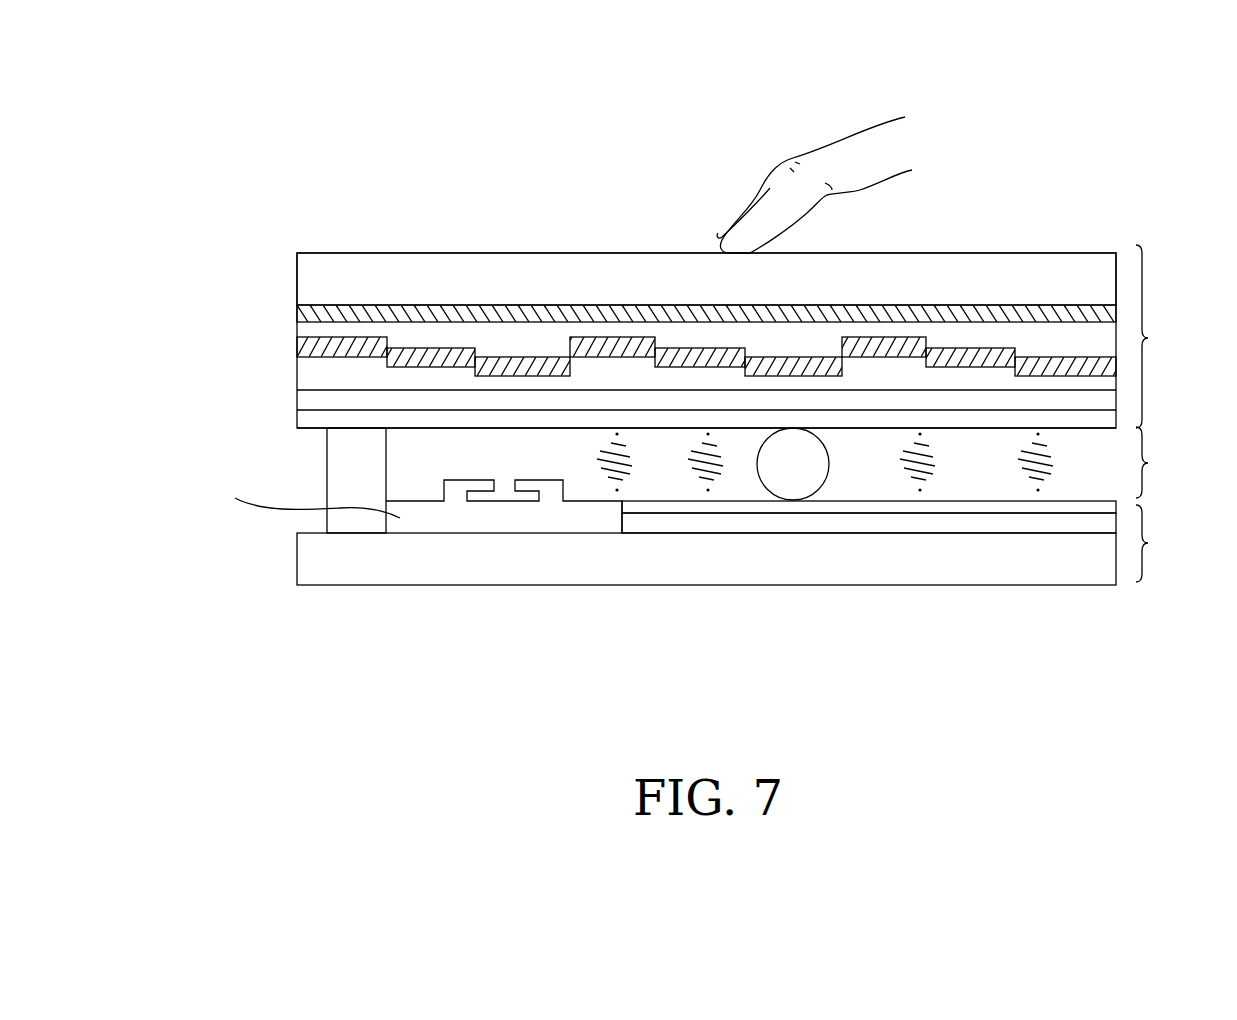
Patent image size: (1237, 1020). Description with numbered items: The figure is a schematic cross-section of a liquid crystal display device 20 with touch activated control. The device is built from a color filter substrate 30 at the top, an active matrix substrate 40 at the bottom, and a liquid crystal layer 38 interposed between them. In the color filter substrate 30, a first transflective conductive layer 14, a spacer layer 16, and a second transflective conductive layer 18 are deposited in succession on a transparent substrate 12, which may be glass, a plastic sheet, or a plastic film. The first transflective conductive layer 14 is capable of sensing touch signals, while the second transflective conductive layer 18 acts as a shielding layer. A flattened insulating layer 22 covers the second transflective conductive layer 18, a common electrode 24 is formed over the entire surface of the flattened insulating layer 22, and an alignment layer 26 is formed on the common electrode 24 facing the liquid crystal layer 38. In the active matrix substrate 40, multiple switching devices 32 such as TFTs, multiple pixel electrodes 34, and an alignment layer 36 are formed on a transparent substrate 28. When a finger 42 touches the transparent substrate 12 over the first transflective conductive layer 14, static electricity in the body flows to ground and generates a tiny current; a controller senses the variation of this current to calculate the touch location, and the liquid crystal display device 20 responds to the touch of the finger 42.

The liquid crystal display device 20 is at (1231, 90).
The transparent substrate 12 is at (307, 280).
The first transflective conductive layer 14 is at (305, 317).
The spacer layer 16 is at (307, 329).
The second transflective conductive layer 18 is at (307, 348).
The flattened insulating layer 22 is at (307, 373).
The common electrode 24 is at (307, 402).
The alignment layer 26 is at (305, 423).
The transparent substrate 28 is at (657, 555).
The color filter substrate 30 is at (1165, 336).
The switching devices 32 is at (507, 522).
The pixel electrodes 34 is at (832, 522).
The alignment layer 36 is at (952, 502).
The liquid crystal layer 38 is at (895, 463).
The active matrix substrate 40 is at (1165, 543).
The finger 42 is at (775, 167).